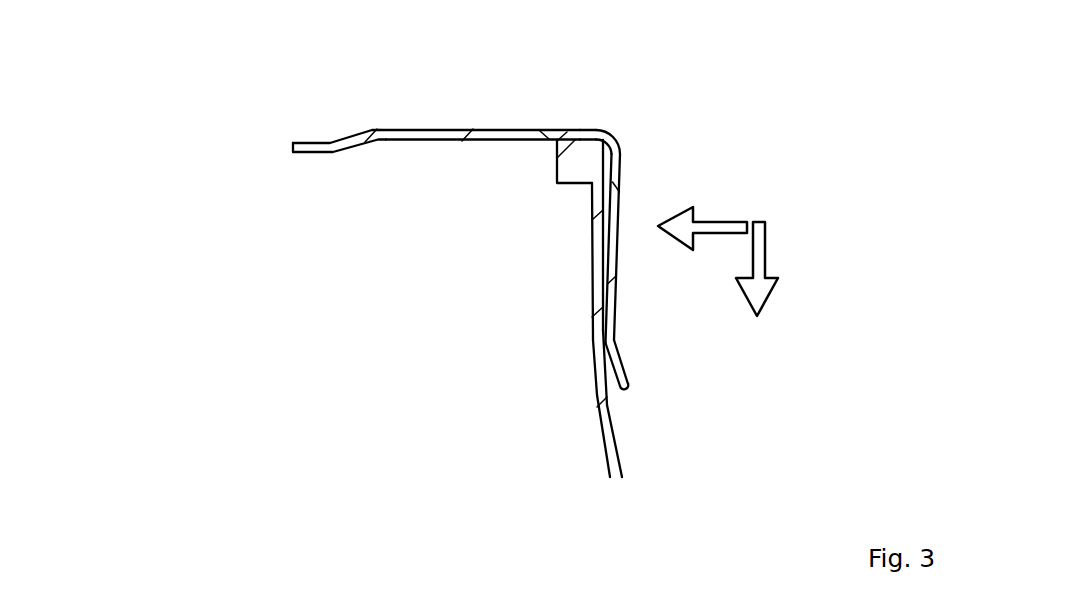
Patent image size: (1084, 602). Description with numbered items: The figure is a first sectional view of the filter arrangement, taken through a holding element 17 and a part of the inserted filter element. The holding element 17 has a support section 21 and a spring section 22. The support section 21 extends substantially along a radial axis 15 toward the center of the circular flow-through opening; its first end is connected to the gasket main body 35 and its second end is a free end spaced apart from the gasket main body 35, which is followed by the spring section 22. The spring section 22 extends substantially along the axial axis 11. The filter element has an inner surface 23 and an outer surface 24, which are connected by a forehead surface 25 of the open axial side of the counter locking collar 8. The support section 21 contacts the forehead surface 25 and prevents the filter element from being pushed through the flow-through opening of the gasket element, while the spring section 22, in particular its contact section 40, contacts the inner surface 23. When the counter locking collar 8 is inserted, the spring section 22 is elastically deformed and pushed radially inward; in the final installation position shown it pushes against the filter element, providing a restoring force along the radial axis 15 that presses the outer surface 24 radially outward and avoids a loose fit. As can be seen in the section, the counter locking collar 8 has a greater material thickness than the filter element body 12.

The counter locking collar 8 is at (487, 308).
The axial axis 11 is at (766, 287).
The filter element body 12 is at (587, 385).
The radial axis 15 is at (690, 222).
The holding element 17 is at (636, 127).
The support section 21 is at (489, 130).
The spring section 22 is at (629, 180).
The inner surface 23 is at (623, 412).
The outer surface 24 is at (576, 293).
The forehead surface 25 is at (589, 127).
The gasket main body 35 is at (282, 145).
The contact section 40 is at (624, 342).